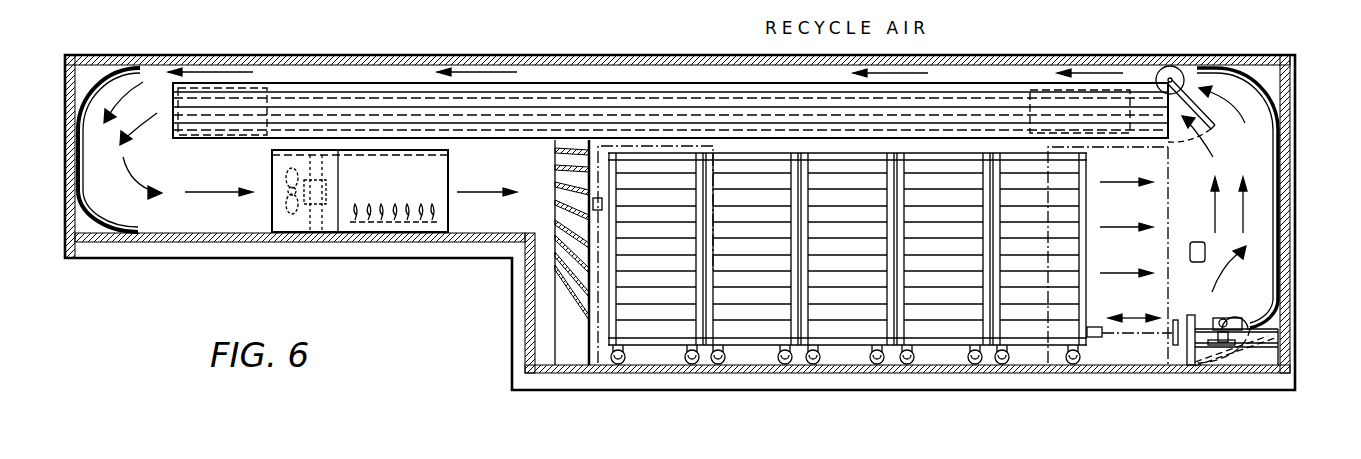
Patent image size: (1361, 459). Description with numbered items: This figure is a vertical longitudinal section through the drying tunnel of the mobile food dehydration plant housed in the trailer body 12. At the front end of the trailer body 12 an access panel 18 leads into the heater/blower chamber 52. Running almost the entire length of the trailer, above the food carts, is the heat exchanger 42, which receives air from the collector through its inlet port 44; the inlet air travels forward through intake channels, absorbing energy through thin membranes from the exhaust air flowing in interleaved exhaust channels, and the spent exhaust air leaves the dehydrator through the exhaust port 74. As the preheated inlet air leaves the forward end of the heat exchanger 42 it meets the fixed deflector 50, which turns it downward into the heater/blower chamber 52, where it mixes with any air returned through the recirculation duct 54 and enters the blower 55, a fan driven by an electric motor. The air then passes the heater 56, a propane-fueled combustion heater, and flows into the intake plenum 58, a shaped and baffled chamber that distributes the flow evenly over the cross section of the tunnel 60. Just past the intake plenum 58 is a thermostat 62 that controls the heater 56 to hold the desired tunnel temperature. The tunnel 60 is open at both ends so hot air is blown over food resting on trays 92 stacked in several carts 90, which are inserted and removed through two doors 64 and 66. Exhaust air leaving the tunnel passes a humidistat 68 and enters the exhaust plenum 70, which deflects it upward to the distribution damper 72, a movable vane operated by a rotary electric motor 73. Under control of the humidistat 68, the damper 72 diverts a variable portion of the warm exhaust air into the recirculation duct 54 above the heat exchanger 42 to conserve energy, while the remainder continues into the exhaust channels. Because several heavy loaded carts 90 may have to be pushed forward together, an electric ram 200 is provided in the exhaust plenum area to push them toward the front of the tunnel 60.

The trailer body 12 is at (527, 303).
The access panel 18 is at (67, 200).
The heat exchanger 42 is at (369, 72).
The inlet port 44 is at (1047, 97).
The fixed deflector 50 is at (96, 80).
The heater/blower chamber 52 is at (213, 210).
The recirculation duct 54 is at (632, 70).
The blower 55 is at (273, 175).
The heater 56 is at (450, 167).
The intake plenum 58 is at (555, 217).
The tunnel 60 is at (753, 362).
The thermostat 62 is at (604, 204).
The door 64 is at (658, 145).
The door 66 is at (1168, 175).
The humidistat 68 is at (1188, 251).
The exhaust plenum 70 is at (1260, 229).
The distribution damper 72 is at (1213, 129).
The rotary electric motor 73 is at (1165, 67).
The exhaust port 74 is at (220, 95).
The cart 90 is at (890, 299).
The tray 92 is at (836, 205).
The electric ram 200 is at (1178, 362).